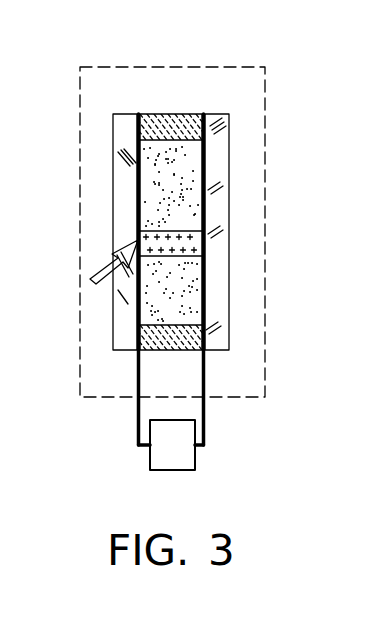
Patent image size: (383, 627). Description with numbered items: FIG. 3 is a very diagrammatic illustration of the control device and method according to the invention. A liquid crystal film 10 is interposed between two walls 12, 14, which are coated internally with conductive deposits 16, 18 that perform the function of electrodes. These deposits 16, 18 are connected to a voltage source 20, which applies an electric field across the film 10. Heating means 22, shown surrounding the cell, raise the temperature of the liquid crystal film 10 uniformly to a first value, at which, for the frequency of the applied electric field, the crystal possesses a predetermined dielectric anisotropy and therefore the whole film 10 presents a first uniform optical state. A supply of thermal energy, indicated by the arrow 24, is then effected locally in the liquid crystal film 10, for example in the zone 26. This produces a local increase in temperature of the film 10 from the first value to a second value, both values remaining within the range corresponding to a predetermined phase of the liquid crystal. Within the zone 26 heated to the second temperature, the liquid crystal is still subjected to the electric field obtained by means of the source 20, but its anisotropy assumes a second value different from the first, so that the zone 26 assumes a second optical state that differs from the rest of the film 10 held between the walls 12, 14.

The liquid crystal film 10 is at (158, 213).
The wall 12 is at (123, 118).
The wall 14 is at (218, 120).
The conductive deposit 16 is at (140, 182).
The conductive deposit 18 is at (205, 172).
The voltage source 20 is at (168, 450).
The heating means 22 is at (265, 360).
The arrow 24 is at (93, 282).
The zone 26 is at (185, 243).